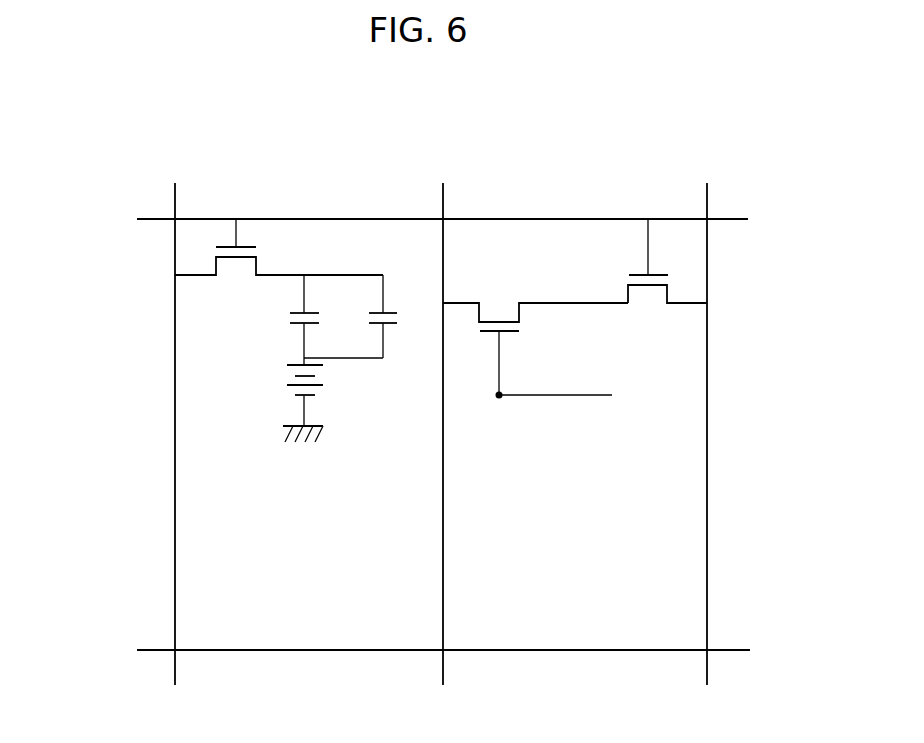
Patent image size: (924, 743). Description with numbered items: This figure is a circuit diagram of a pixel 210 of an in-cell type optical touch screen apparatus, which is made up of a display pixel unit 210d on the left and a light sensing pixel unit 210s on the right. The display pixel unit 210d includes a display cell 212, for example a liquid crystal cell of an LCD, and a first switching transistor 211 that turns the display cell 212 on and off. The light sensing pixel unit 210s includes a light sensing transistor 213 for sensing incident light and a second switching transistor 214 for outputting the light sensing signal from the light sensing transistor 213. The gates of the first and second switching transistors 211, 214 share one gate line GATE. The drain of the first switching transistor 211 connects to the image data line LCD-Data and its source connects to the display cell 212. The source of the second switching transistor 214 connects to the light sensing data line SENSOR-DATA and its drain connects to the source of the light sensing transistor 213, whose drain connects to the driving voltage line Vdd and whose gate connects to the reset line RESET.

The pixel 210 is at (83, 523).
The display pixel unit 210d is at (325, 190).
The light sensing pixel unit 210s is at (541, 190).
The first switching transistor 211 is at (231, 288).
The display cell 212 is at (360, 372).
The light sensing transistor 213 is at (481, 350).
The second switching transistor 214 is at (692, 279).